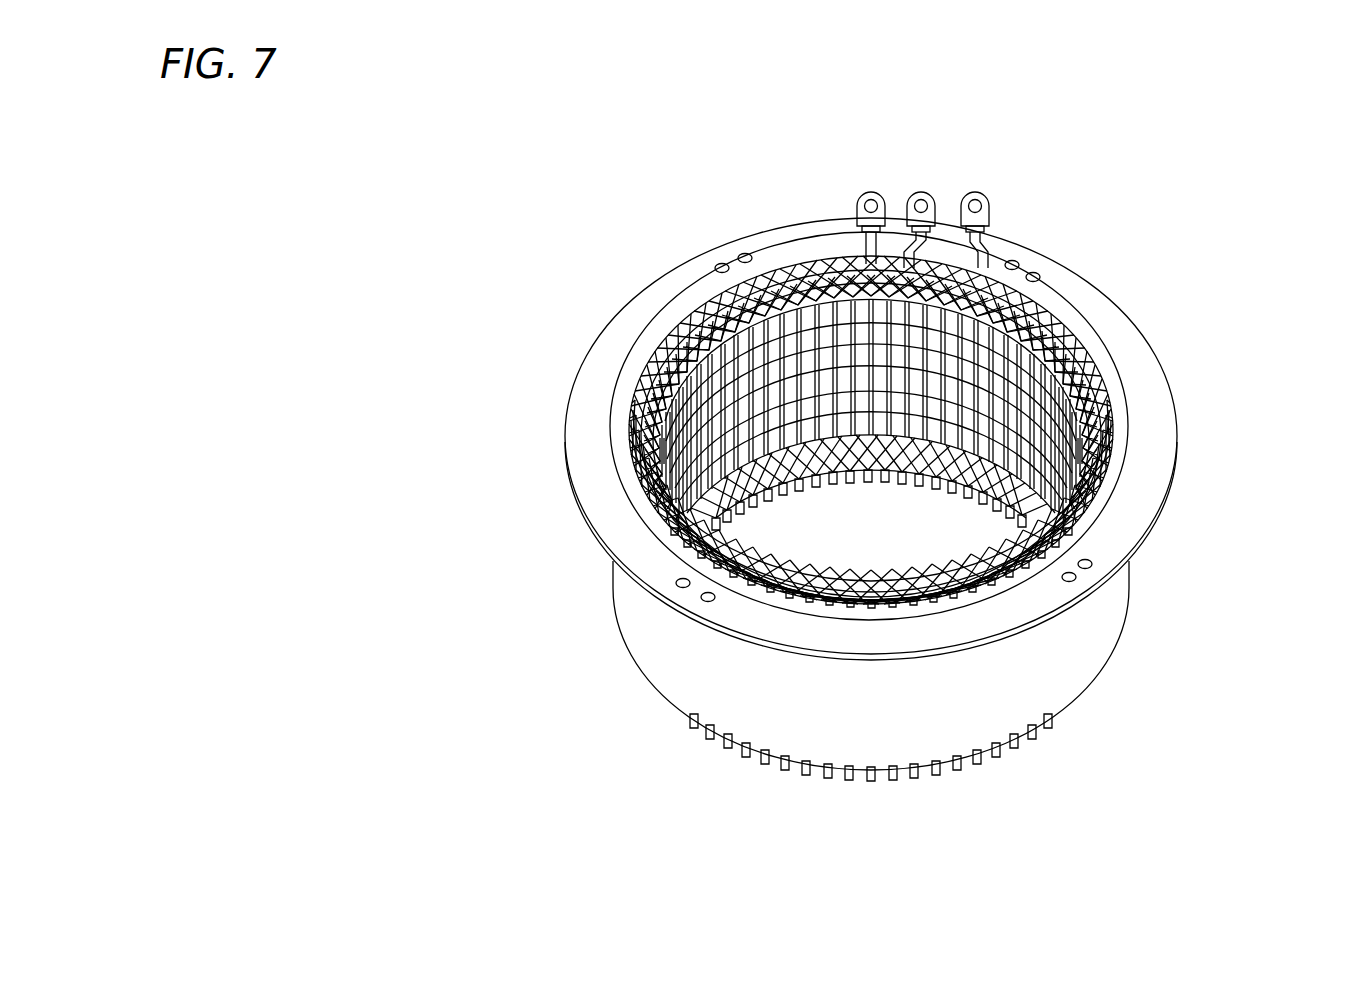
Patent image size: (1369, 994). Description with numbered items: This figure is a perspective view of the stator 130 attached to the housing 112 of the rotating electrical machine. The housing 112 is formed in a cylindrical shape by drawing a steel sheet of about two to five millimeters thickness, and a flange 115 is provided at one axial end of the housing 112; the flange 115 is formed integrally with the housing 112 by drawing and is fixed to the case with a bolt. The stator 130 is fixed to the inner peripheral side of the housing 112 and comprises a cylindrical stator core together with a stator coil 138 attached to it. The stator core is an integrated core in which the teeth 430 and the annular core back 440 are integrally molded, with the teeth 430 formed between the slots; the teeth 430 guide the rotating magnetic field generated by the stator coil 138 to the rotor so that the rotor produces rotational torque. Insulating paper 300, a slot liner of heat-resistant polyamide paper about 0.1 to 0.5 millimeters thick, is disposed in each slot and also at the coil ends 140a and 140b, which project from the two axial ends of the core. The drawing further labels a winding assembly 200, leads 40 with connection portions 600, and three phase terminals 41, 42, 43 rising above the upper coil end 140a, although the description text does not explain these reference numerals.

The stator 130 is at (1187, 231).
The flange 115 is at (598, 497).
The housing 112 is at (655, 632).
The stator coil 138 is at (1095, 400).
The stator coil 200 is at (623, 442).
The insulating paper 300 is at (843, 250).
The coil end 140a is at (676, 318).
The coil end 140b is at (843, 790).
The lead wire portion 40 is at (768, 270).
The neutral point connection 600 is at (797, 262).
The tooth 430 is at (802, 250).
The core back 440 is at (638, 468).
The U-phase terminal 41 is at (872, 192).
The V-phase terminal 42 is at (926, 192).
The W-phase terminal 43 is at (978, 192).